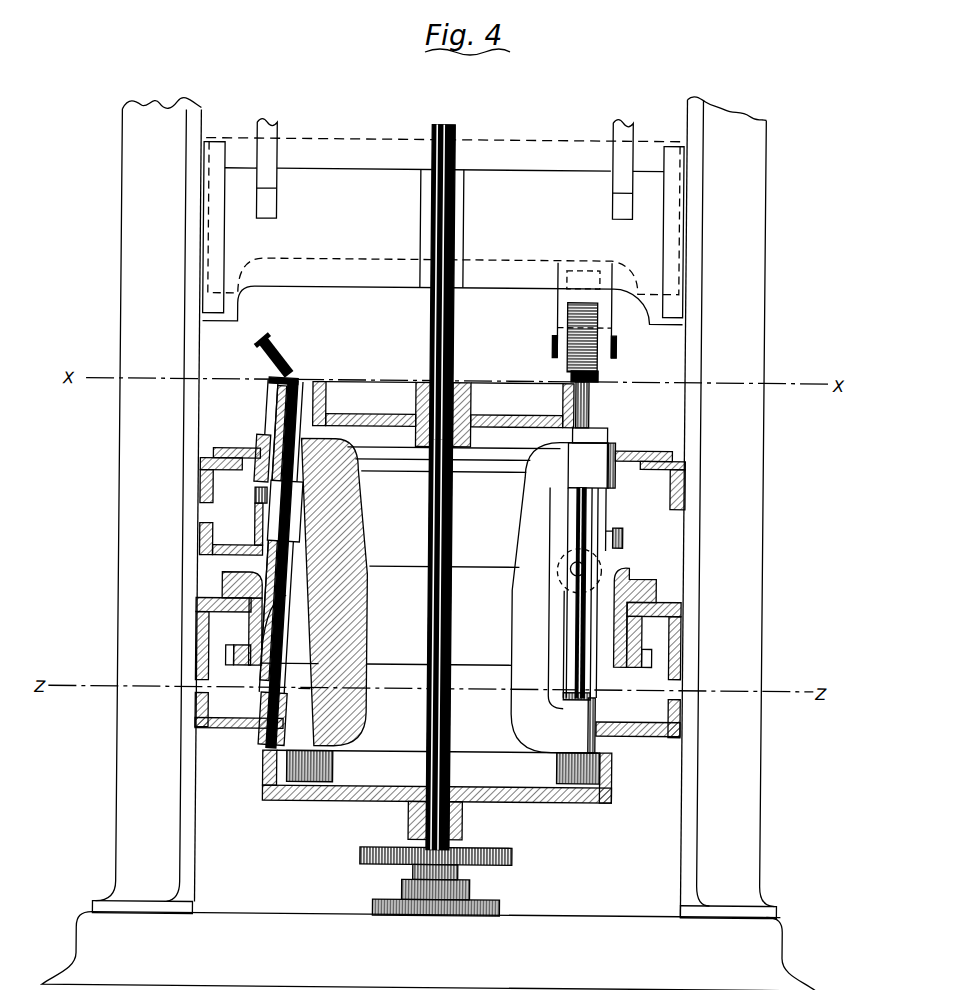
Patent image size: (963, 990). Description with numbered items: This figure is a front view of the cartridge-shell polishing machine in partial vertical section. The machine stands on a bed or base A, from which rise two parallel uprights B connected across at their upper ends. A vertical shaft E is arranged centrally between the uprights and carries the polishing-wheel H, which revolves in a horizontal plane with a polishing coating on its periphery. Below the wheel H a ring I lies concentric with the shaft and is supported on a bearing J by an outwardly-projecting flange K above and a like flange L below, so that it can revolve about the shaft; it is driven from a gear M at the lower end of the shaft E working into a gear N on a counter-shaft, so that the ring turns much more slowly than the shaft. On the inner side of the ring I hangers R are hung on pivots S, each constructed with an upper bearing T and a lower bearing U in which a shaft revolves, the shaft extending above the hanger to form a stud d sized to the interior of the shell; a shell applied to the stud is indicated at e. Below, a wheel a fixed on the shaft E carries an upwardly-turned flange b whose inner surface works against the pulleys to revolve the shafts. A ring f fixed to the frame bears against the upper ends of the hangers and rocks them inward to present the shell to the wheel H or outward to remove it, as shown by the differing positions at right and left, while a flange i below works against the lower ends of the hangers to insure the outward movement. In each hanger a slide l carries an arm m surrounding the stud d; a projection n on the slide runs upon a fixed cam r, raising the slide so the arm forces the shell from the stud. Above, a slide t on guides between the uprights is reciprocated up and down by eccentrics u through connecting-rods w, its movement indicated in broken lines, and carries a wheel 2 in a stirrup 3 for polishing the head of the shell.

The bed or base A is at (429, 950).
The uprights B is at (437, 505).
The slide t is at (445, 231).
The connecting-rods w is at (444, 169).
The vertical shaft E is at (440, 486).
The stirrup 3 is at (589, 311).
The wheels 2 is at (583, 342).
The shell on the stud e is at (591, 405).
The arm m is at (606, 430).
The wheel H is at (443, 415).
The ring I is at (432, 556).
The hangers R is at (453, 595).
The bearing U is at (273, 562).
The studs or pins d is at (282, 377).
The ring f is at (443, 493).
The cam r is at (252, 524).
The projection n is at (445, 517).
The flange K is at (438, 623).
The bearing J is at (439, 641).
The flange L is at (438, 703).
The flange i is at (437, 720).
The bearing T is at (591, 465).
The slide l is at (587, 594).
The pivot S is at (579, 571).
The eccentrics u is at (581, 725).
The link v is at (438, 666).
The flange b is at (443, 776).
The gear N is at (443, 767).
The wheel a is at (436, 813).
The gear M is at (445, 881).